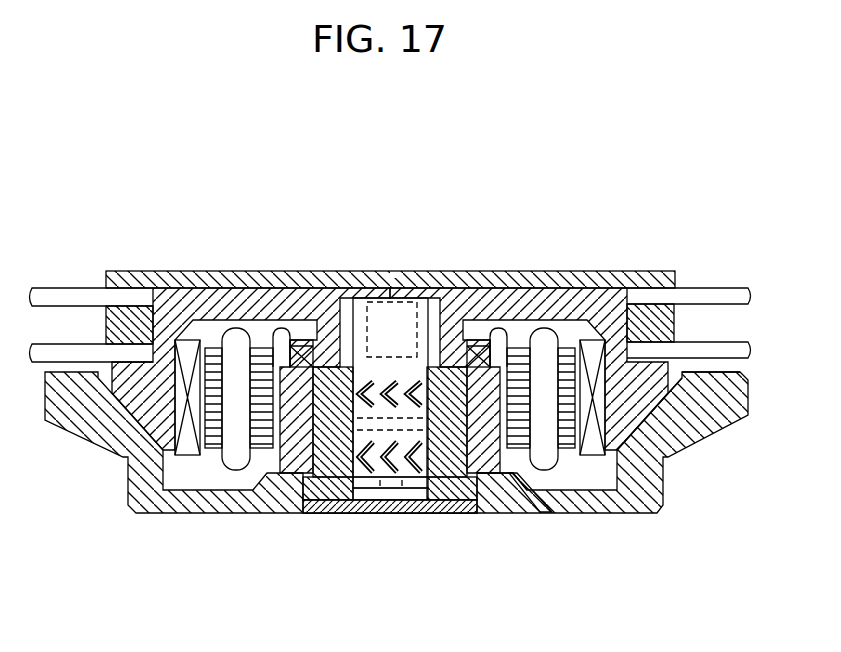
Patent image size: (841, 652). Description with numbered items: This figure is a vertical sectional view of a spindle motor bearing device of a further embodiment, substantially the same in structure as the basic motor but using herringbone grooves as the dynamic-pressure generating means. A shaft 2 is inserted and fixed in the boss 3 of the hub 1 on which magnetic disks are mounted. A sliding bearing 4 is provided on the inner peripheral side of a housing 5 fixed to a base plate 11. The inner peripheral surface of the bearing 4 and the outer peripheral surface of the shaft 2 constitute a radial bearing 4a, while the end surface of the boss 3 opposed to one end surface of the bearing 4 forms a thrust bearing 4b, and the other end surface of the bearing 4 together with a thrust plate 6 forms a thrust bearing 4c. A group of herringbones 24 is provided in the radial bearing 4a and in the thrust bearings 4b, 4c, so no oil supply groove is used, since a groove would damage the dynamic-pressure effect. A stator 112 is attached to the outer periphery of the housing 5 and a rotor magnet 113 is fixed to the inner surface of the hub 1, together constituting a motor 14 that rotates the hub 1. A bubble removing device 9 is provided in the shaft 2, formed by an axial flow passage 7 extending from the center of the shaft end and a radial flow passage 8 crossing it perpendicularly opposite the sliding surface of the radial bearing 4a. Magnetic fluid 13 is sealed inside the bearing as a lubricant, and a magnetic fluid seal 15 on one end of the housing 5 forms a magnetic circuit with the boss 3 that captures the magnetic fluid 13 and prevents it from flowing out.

The hub 1 is at (553, 285).
The shaft 2 is at (413, 377).
The boss portion 3 is at (480, 377).
The sliding bearing 4 is at (467, 470).
The radial bearing 4a is at (292, 518).
The thrust bearing 4b is at (320, 378).
The thrust bearing 4c is at (455, 520).
The housing 5 is at (535, 480).
The thrust plate 6 is at (335, 520).
The axial flow passage 7 is at (410, 520).
The radial flow passage 8 is at (437, 518).
The bubble removing device 9 is at (411, 557).
The base plate 11 is at (163, 513).
The magnetic fluid 13 is at (495, 490).
The motor 14 is at (666, 505).
The magnetic fluid seal 15 is at (300, 345).
The herringbones 24 is at (380, 313).
The stator 112 is at (600, 462).
The rotor magnet 113 is at (657, 490).